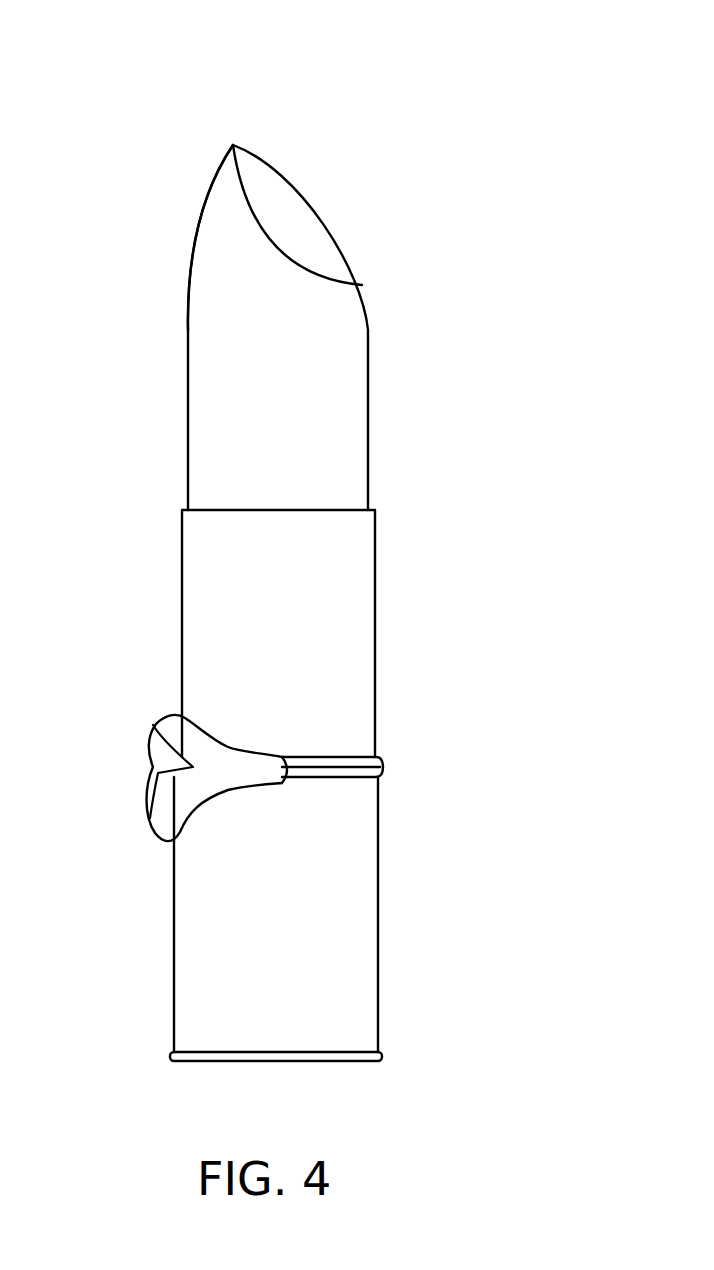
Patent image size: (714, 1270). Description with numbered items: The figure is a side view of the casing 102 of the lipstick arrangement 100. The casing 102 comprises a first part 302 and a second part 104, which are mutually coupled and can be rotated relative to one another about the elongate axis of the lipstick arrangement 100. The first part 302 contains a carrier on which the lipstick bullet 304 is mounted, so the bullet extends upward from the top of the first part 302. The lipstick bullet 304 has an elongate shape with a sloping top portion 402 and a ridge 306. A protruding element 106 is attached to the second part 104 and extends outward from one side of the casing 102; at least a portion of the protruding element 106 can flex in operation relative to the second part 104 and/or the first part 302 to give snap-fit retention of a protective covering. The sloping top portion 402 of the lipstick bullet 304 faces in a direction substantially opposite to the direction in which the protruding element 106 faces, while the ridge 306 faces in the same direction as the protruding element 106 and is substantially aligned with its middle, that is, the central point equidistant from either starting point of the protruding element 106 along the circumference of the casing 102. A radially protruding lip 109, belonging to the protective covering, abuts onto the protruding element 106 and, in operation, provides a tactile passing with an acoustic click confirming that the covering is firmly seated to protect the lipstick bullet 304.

The lipstick arrangement 100 is at (453, 71).
The casing 102 is at (170, 995).
The second part 104 is at (173, 895).
The protruding element 106 is at (150, 755).
The radially protruding lip 109 is at (380, 758).
The first part 302 is at (182, 575).
The lipstick bullet 304 is at (230, 356).
The ridge 306 is at (205, 193).
The sloping top portion 402 is at (310, 227).